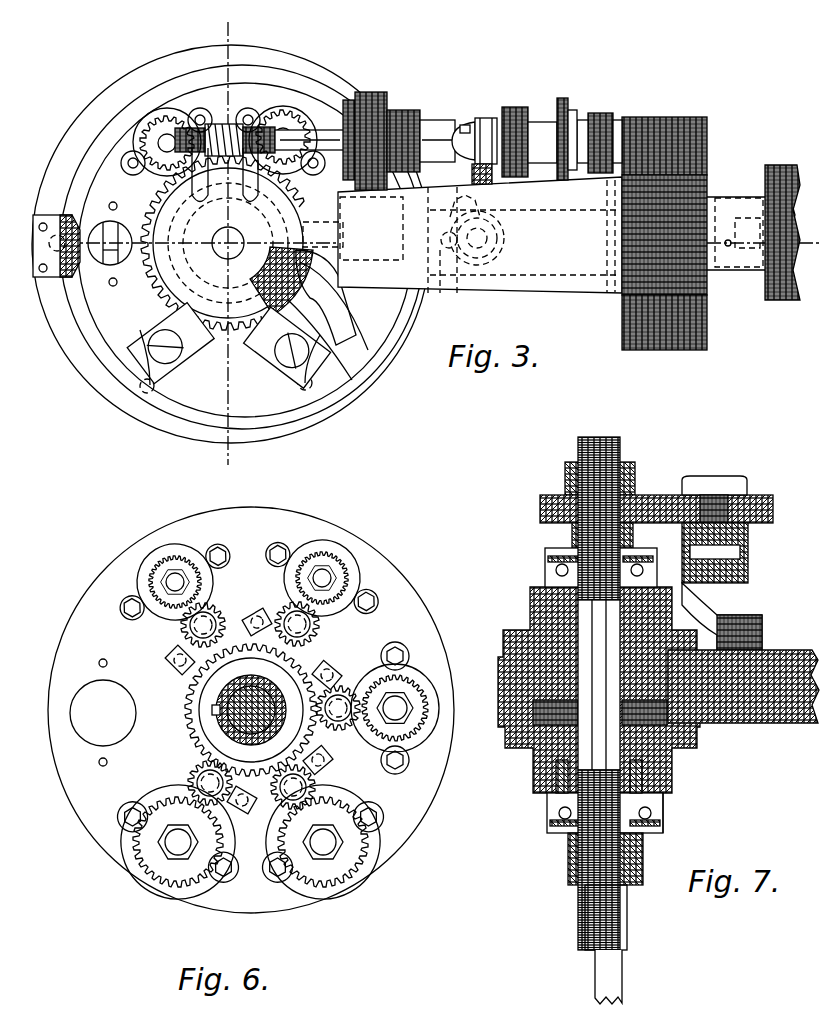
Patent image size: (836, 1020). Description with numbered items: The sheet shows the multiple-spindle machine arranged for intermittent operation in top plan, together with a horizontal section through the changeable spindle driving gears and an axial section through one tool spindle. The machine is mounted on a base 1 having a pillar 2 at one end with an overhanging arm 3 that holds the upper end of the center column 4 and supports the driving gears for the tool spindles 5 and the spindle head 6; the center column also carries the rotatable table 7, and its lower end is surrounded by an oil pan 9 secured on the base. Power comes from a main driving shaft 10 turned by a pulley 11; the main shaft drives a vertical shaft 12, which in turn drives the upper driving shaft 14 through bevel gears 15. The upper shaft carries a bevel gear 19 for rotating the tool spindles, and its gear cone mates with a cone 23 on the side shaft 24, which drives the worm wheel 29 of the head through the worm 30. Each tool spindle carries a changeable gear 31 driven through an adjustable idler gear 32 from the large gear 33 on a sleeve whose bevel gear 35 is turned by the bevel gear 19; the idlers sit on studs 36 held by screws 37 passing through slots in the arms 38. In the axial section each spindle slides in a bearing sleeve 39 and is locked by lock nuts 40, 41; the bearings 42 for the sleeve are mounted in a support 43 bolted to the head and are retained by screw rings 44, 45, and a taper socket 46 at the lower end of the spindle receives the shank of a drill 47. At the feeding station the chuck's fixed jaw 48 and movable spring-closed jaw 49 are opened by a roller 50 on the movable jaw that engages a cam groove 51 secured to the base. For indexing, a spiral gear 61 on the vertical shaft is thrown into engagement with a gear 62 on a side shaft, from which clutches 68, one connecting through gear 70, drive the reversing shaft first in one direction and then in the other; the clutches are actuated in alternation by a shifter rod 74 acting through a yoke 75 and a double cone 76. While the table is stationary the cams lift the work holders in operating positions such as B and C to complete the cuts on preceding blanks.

In FIG. 3, the base 1 is at (688, 126).
In FIG. 3, the pillar 2 is at (688, 292).
In FIG. 3, the overhanging arm 3 is at (462, 235).
In FIG. 3, the center column 4 is at (224, 240).
In FIG. 3, the tool spindles 5 is at (252, 22).
In FIG. 6, the tool spindles 5 is at (176, 578).
In FIG. 7, the tool spindles 5 is at (612, 728).
In FIG. 3, the spindle head 6 is at (100, 350).
In FIG. 6, the spindle head 6 is at (398, 828).
In FIG. 7, the spindle head 6 is at (762, 710).
In FIG. 3, the rotatable table 7 is at (335, 360).
In FIG. 6, the rotatable table 7 is at (170, 568).
In FIG. 3, the oil pan 9 is at (100, 380).
In FIG. 3, the main driving shaft 10 is at (726, 200).
In FIG. 3, the pulley 11 is at (785, 170).
In FIG. 3, the vertical shaft 12 is at (481, 243).
In FIG. 3, the upper driving shaft 14 is at (432, 295).
In FIG. 3, the bevel gears 15 is at (462, 290).
In FIG. 3, the bevel gear 19 is at (302, 268).
In FIG. 3, the mating cone 23 is at (375, 95).
In FIG. 3, the side shaft 24 is at (332, 130).
In FIG. 3, the worm wheel 29 is at (160, 285).
In FIG. 3, the worm 30 is at (225, 124).
In FIG. 3, the changeable gears 31 is at (150, 135).
In FIG. 6, the changeable gears 31 is at (150, 575).
In FIG. 7, the changeable gears 31 is at (545, 505).
In FIG. 6, the idler gear 32 is at (255, 616).
In FIG. 7, the idler gear 32 is at (757, 492).
In FIG. 6, the large gear 33 is at (190, 718).
In FIG. 3, the bevel gear 35 is at (366, 350).
In FIG. 6, the studs 36 is at (192, 630).
In FIG. 7, the studs 36 is at (750, 540).
In FIG. 6, the screws 37 is at (172, 663).
In FIG. 7, the screws 37 is at (758, 622).
In FIG. 6, the arms 38 is at (215, 830).
In FIG. 7, the arms 38 is at (760, 636).
In FIG. 7, the bearing sleeves 39 is at (560, 780).
In FIG. 7, the lock nut 40 is at (566, 860).
In FIG. 7, the lock nut 41 is at (636, 470).
In FIG. 7, the bearings 42 is at (553, 560).
In FIG. 3, the supports 43 is at (128, 150).
In FIG. 6, the supports 43 is at (130, 570).
In FIG. 7, the supports 43 is at (538, 620).
In FIG. 7, the screw ring 44 is at (648, 832).
In FIG. 7, the screw ring 45 is at (636, 548).
In FIG. 7, the taper sockets 46 is at (612, 925).
In FIG. 7, the drills 47 is at (622, 990).
In FIG. 3, the fixed jaw 48 is at (256, 355).
In FIG. 3, the movable spring closed jaw 49 is at (236, 404).
In FIG. 3, the roller 50 is at (55, 260).
In FIG. 3, the cam groove 51 is at (58, 215).
In FIG. 3, the spiral gear 61 is at (500, 224).
In FIG. 3, the gear 62 is at (488, 180).
In FIG. 3, the clutches 68 is at (512, 110).
In FIG. 3, the gear 70 is at (563, 100).
In FIG. 3, the shifter rod 74 is at (470, 124).
In FIG. 3, the yoke 75 is at (466, 125).
In FIG. 3, the double cone 76 is at (488, 120).
In FIG. 3, the operating position B is at (108, 411).
In FIG. 3, the second operating position C is at (316, 433).